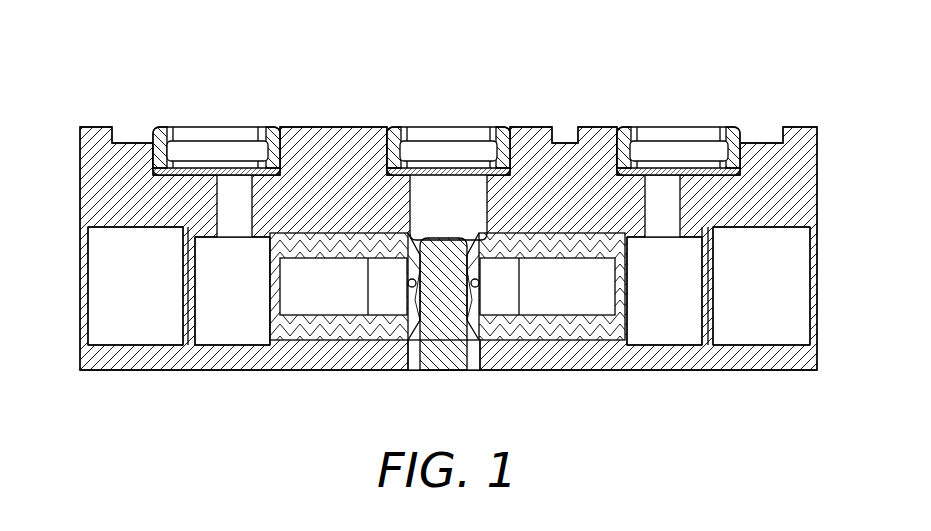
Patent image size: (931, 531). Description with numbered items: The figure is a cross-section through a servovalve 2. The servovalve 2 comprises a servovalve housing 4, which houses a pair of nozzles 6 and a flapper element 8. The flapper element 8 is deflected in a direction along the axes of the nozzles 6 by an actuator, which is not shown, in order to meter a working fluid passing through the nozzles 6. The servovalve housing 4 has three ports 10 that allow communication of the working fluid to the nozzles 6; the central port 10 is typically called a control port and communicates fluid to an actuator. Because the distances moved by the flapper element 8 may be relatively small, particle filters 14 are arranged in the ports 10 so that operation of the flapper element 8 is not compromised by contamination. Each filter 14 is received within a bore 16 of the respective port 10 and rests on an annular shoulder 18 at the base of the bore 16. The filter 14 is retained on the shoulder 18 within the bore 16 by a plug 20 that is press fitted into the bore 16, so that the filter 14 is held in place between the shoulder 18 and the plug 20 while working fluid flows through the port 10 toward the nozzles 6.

The servovalve 2 is at (716, 62).
The servovalve housing 4 is at (660, 358).
The nozzles 6 is at (342, 332).
The flapper element 8 is at (447, 358).
The ports 10 is at (190, 182).
The particle filters 14 is at (228, 160).
The bore 16 is at (275, 158).
The annular shoulder 18 is at (160, 176).
The plug 20 is at (166, 130).